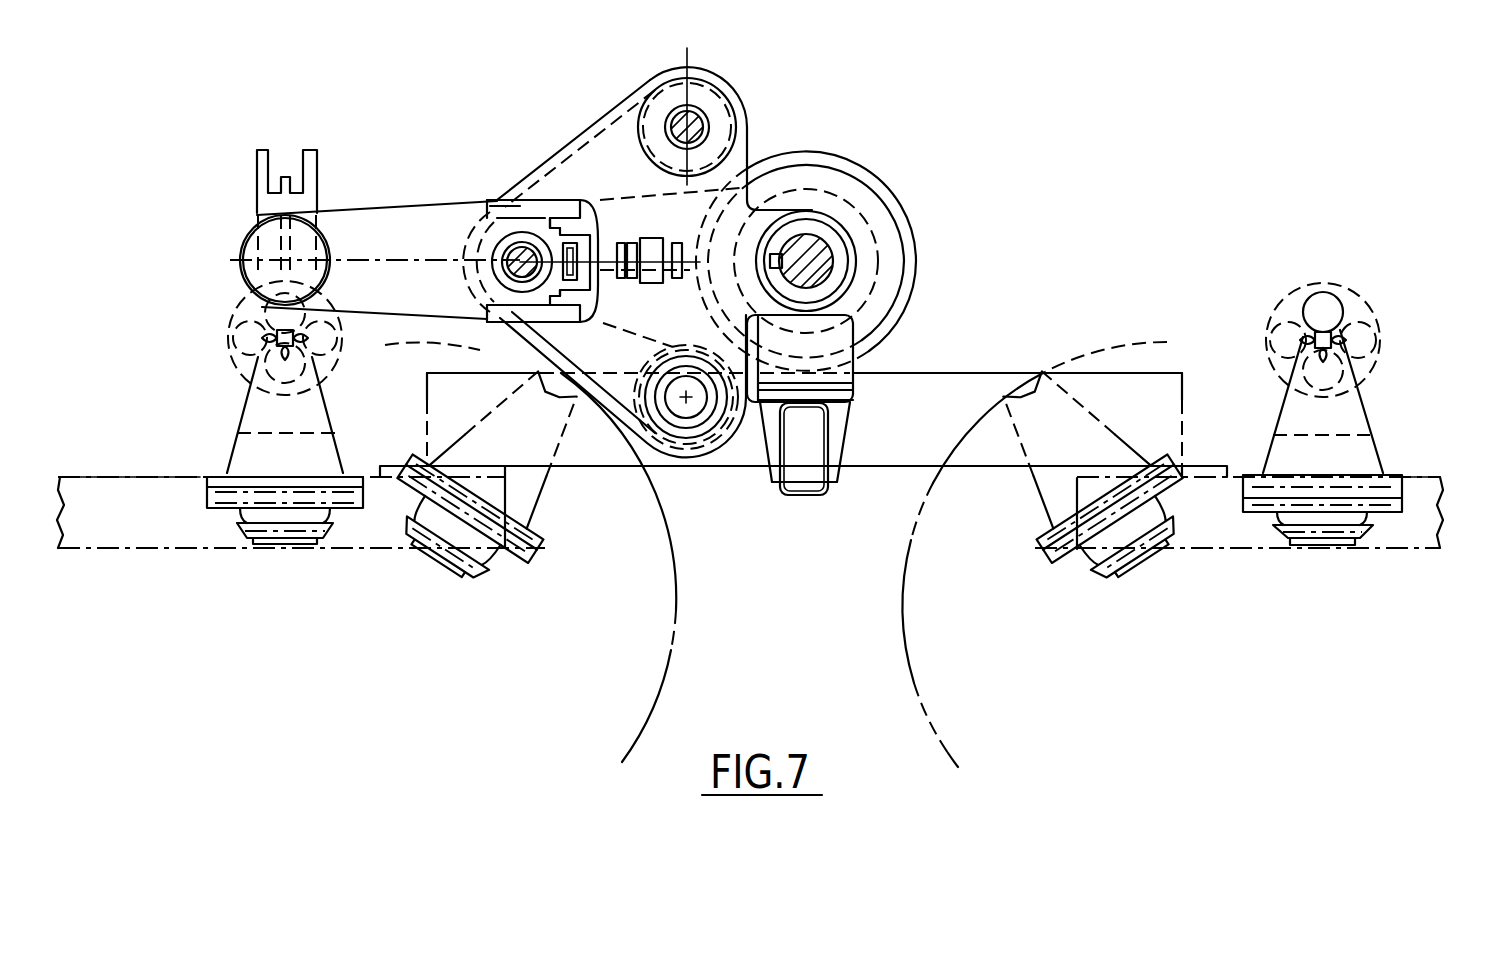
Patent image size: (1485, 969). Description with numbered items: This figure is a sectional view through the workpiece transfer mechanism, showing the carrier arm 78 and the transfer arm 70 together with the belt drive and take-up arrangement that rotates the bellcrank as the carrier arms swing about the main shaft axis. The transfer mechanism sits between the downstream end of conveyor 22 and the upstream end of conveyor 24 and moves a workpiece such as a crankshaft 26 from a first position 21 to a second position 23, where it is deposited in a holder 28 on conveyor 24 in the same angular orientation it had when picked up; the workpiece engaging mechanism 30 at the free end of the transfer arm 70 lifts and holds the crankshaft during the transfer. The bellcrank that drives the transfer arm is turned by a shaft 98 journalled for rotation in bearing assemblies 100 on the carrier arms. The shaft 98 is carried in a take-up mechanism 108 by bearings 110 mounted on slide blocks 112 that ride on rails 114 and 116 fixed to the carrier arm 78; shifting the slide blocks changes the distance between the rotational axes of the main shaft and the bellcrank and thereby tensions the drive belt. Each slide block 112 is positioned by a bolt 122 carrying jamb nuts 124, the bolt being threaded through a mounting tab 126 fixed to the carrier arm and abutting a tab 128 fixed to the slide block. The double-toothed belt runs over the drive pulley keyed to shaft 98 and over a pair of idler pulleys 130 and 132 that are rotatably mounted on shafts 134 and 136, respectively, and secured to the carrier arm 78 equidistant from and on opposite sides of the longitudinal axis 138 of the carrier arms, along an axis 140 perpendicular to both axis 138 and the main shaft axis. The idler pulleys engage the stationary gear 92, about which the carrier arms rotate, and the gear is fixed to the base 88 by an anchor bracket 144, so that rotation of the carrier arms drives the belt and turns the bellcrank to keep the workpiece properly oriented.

The first position 21 is at (295, 550).
The conveyor 22 is at (114, 550).
The second position 23 is at (1321, 552).
The conveyor 24 is at (1421, 551).
The crankshaft 26 is at (232, 318).
The holder 28 is at (1358, 412).
The workpiece engaging mechanism 30 is at (249, 145).
The transfer arm 70 is at (384, 214).
The carrier arm 78 is at (602, 140).
The base 88 is at (966, 382).
The stationary gear 92 is at (903, 218).
The shaft 98 is at (490, 272).
The bearing assemblies 100 is at (505, 247).
The take-up mechanism 108 is at (493, 198).
The bearings 110 is at (562, 292).
The slide blocks 112 is at (498, 219).
The rail 114 is at (560, 215).
The rail 116 is at (507, 318).
The bolt 122 is at (630, 280).
The jamb nuts 124 is at (676, 242).
The mounting tab 126 is at (656, 286).
The tab 128 is at (588, 240).
The idler pulley 130 is at (710, 92).
The idler pulley 132 is at (679, 430).
The shaft 134 is at (703, 120).
The shaft 136 is at (697, 405).
The longitudinal axis 138 is at (356, 253).
The axis 140 is at (690, 50).
The anchor bracket 144 is at (876, 356).